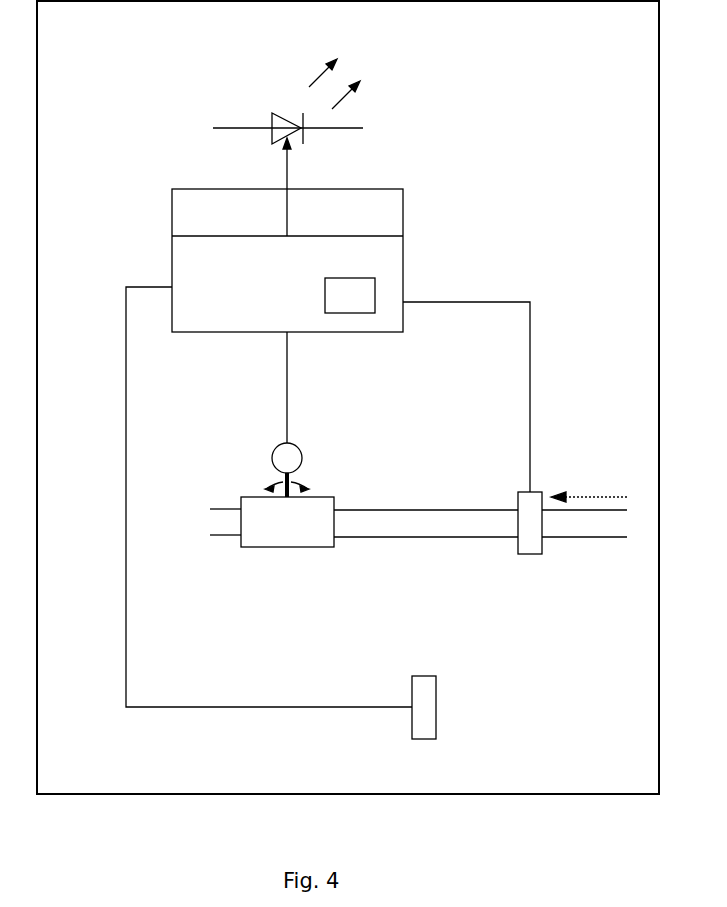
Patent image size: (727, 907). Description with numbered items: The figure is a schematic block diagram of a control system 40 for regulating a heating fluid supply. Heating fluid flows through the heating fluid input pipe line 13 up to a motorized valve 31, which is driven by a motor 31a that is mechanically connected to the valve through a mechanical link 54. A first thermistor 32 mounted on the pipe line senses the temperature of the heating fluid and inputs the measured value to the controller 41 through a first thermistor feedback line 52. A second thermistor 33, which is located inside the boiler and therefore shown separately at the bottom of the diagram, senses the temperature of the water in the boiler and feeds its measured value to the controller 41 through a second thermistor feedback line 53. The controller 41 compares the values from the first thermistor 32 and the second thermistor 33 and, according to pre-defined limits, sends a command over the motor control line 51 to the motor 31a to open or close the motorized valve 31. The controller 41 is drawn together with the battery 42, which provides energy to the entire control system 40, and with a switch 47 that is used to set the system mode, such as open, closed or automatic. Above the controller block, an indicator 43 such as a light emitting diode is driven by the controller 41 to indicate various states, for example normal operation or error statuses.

The control system 40 is at (579, 72).
The indicator 43 is at (315, 75).
The battery 42 is at (208, 210).
The controller 41 is at (291, 259).
The switch 47 is at (352, 303).
The motor control line 51 is at (284, 405).
The motor 31a is at (291, 445).
The mechanical link 54 is at (298, 478).
The motorized valve 31 is at (293, 537).
The heating fluid input pipe line 13 is at (592, 530).
The first thermistor 32 is at (530, 532).
The first thermistor feedback line 52 is at (528, 391).
The second thermistor feedback line 53 is at (124, 460).
The second thermistor 33 is at (428, 692).